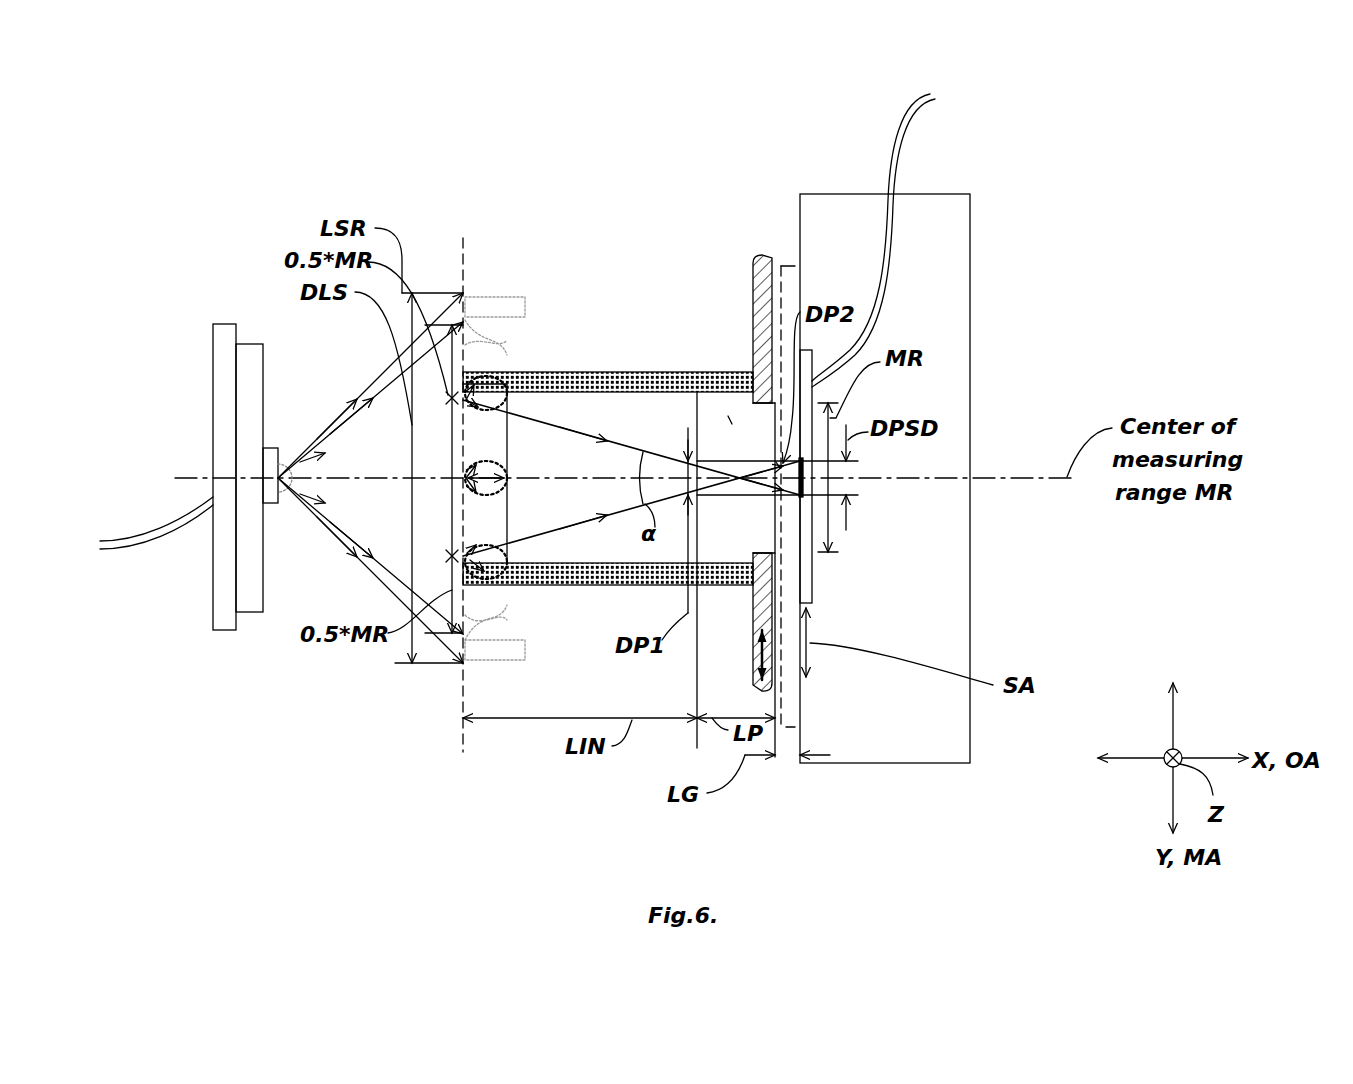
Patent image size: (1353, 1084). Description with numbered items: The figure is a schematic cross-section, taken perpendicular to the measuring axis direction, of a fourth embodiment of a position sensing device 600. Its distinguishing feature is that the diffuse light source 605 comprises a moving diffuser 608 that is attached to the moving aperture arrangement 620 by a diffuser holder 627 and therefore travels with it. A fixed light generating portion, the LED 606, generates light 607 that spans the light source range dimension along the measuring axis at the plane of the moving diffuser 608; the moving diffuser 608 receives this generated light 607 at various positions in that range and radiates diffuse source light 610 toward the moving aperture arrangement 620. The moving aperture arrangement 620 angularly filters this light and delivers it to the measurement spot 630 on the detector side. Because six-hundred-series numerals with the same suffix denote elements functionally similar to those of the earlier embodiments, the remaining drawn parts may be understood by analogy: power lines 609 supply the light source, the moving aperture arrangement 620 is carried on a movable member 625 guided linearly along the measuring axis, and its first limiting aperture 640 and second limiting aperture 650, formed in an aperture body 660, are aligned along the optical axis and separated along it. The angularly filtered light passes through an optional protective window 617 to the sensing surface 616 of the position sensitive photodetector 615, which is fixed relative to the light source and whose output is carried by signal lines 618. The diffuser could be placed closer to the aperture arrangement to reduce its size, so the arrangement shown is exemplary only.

The position sensing device 600 is at (1133, 220).
The diffuse light source 605 is at (263, 226).
The LED 606 is at (233, 330).
The light 607 is at (296, 522).
The moving diffuser 608 is at (275, 420).
The light source cable 609 is at (137, 548).
The diffuse source light 610 is at (482, 522).
The detector housing 615 is at (952, 217).
The position sensitive detector 616 is at (803, 555).
The detector plane element 617 is at (795, 266).
The detector signal cable 618 is at (930, 95).
The moving aperture arrangement 620 is at (802, 146).
The aperture plate 625 is at (770, 693).
The diffuser holder 627 is at (617, 575).
The measurement spot 630 is at (802, 490).
The first lens of lens group 640 is at (694, 370).
The third lens of lens group 650 is at (778, 465).
The second lens of lens group 660 is at (730, 420).